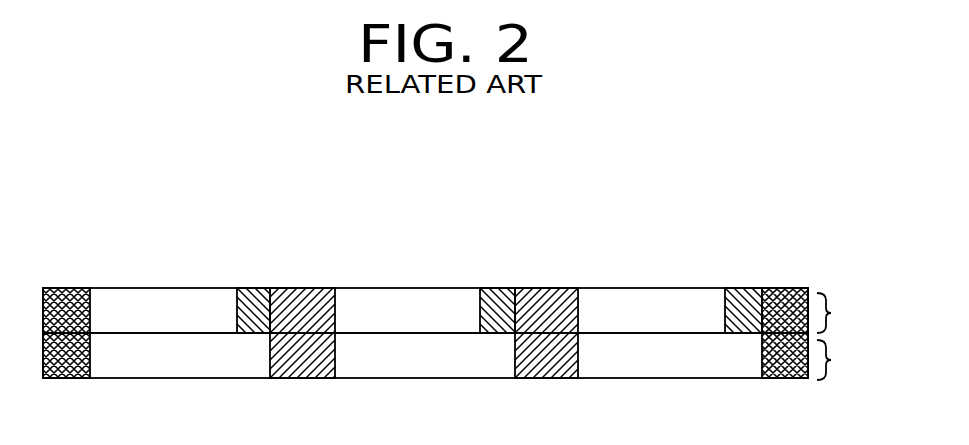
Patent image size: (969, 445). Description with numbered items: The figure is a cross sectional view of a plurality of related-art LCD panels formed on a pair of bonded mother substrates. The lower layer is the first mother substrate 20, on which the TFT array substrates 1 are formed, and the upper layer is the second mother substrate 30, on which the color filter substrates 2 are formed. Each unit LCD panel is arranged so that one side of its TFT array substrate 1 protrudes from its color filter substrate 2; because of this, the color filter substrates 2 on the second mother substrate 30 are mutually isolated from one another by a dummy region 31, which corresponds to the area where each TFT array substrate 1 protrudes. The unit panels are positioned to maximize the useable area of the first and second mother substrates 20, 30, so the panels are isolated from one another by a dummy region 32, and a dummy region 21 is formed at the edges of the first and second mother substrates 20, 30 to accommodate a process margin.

The TFT array substrate 1 is at (178, 363).
The color filter substrate 2 is at (175, 303).
The first mother substrate 20 is at (840, 360).
The second mother substrate 30 is at (840, 313).
The dummy region 21 is at (65, 303).
The dummy region 31 is at (257, 303).
The dummy region 32 is at (308, 303).